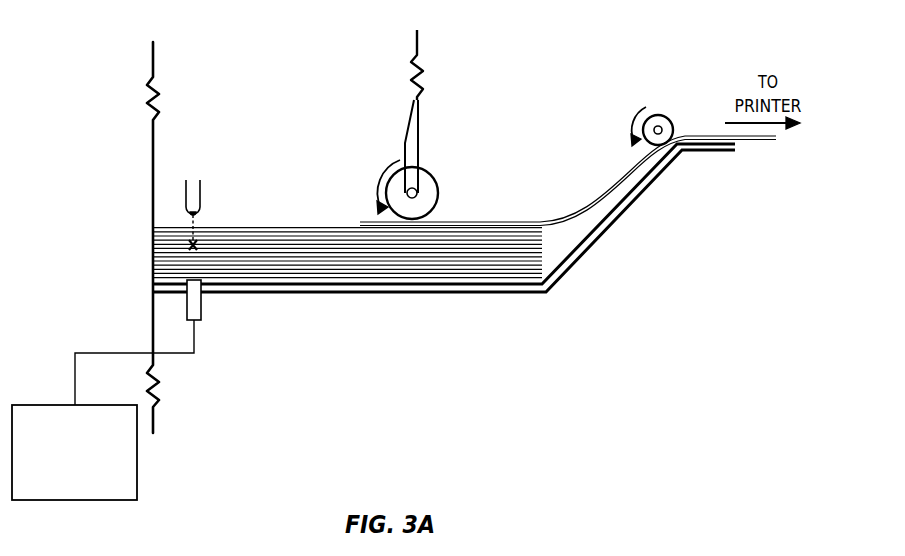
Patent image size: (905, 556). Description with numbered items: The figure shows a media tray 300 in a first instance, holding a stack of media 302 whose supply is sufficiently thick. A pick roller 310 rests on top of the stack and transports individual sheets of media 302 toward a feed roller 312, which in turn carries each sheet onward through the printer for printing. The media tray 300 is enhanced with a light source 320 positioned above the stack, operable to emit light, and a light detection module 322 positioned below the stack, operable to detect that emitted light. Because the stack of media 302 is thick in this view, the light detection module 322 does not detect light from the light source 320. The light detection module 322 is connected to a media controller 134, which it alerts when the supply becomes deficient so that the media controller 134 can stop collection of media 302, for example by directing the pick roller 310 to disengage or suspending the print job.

The media tray 300 is at (717, 295).
The media 302 is at (544, 250).
The pick roller 310 is at (428, 172).
The feed roller 312 is at (658, 115).
The light source 320 is at (197, 195).
The light detection module 322 is at (195, 305).
The media controller 134 is at (60, 482).